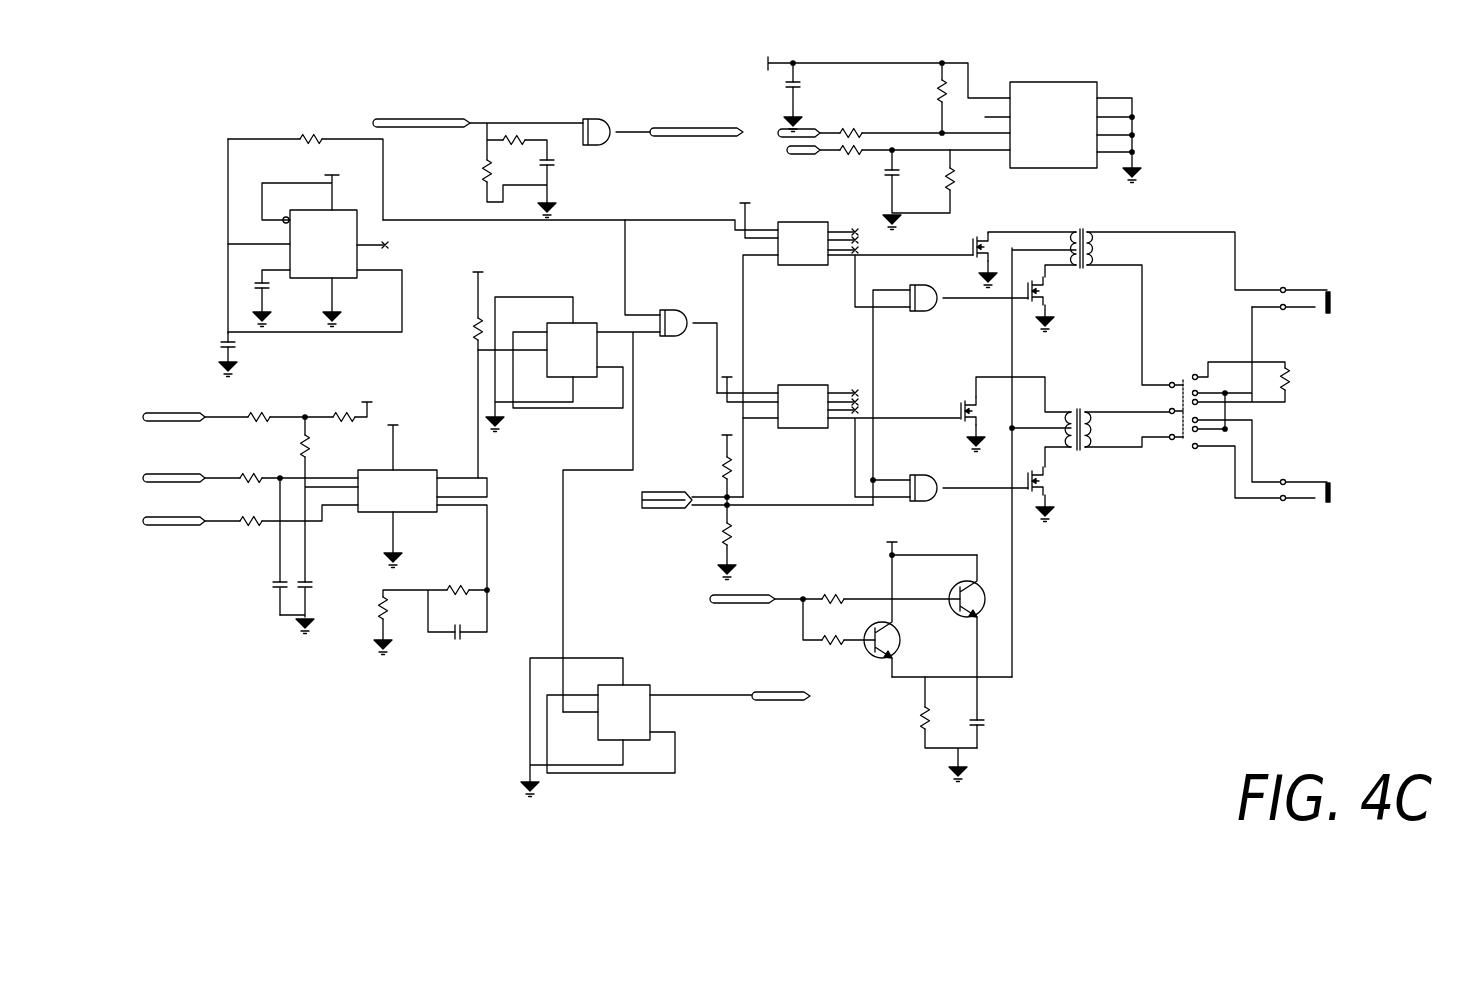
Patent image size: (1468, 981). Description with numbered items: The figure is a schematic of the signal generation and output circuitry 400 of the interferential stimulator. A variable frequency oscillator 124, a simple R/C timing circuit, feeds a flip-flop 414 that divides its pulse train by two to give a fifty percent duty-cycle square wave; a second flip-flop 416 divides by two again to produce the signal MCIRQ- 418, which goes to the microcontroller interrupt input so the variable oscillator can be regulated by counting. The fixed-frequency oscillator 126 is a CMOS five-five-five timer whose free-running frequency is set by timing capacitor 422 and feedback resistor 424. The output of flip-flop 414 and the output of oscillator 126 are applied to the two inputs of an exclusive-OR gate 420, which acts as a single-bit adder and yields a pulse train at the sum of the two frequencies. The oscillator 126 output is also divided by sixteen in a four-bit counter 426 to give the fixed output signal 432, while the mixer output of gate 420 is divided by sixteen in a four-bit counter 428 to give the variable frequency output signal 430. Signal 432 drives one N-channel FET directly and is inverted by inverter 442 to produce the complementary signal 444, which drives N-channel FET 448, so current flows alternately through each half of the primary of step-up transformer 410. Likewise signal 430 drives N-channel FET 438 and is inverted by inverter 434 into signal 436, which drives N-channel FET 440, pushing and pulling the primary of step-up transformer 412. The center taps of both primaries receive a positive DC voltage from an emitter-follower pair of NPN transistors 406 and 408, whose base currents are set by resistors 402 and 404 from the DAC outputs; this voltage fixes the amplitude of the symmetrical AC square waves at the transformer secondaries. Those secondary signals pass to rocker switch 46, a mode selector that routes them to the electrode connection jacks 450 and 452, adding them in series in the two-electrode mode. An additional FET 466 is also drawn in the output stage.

The signal generation and output circuitry 400 is at (1235, 131).
The feedback resistor 424 is at (312, 138).
The fixed-frequency oscillator 126 is at (290, 232).
The timing capacitor 422 is at (222, 345).
The variable frequency oscillator 124 is at (416, 470).
The flip-flop 414 is at (587, 323).
The second flip-flop 416 is at (640, 685).
The MCIRQ- signal 418 is at (777, 700).
The exclusive-OR gate 420 is at (672, 312).
The 4-bit counter 426 is at (788, 222).
The 4-bit counter 428 is at (805, 385).
The variable frequency output signal 430 is at (840, 430).
The fixed output signal 432 is at (845, 263).
The inverter 434 is at (926, 502).
The inverted variable signal 436 is at (978, 487).
The N-channel FET 438 is at (966, 406).
The N-channel FET 440 is at (1026, 492).
The inverter 442 is at (921, 306).
The inverted fixed signal 444 is at (984, 300).
The N-channel FET 448 is at (1027, 305).
The transistor 466 is at (972, 238).
The step-up transformer 410 is at (1077, 228).
The step-up transformer 412 is at (1085, 449).
The rocker switch 46 is at (1199, 452).
The electrode connection jack 450 is at (1302, 290).
The active electrode jack 452 is at (1295, 497).
The resistor 402 is at (832, 598).
The resistor 404 is at (822, 640).
The NPN transistor 406 is at (985, 586).
The NPN transistor 408 is at (876, 660).